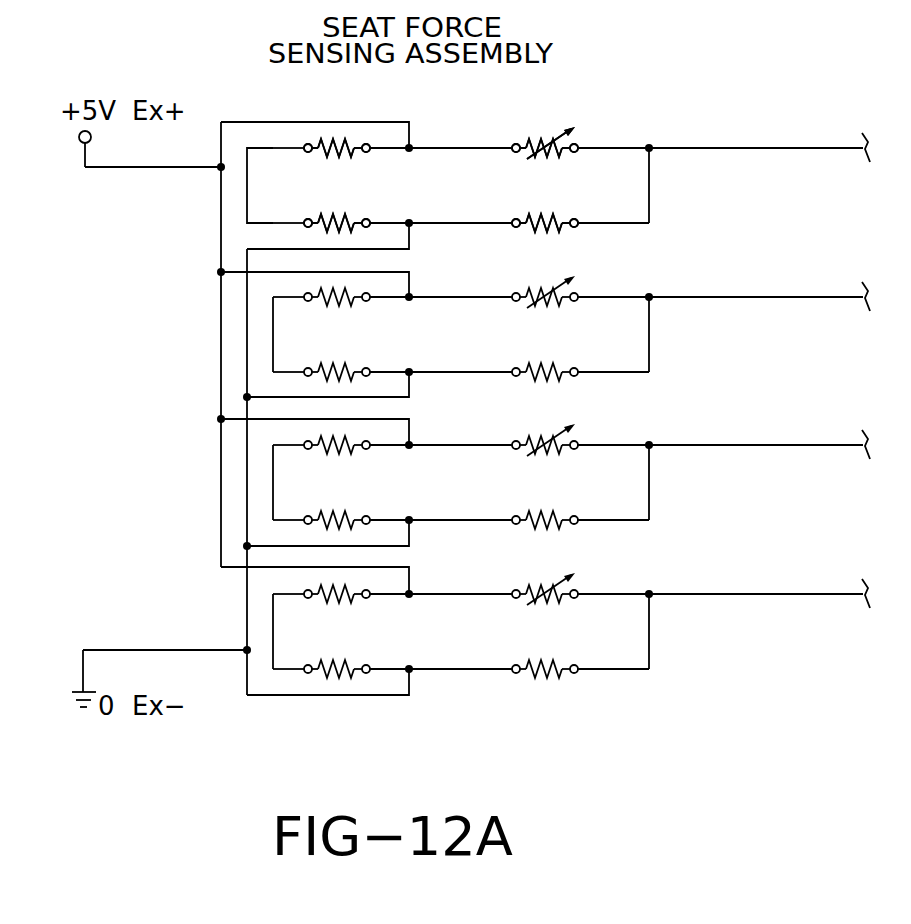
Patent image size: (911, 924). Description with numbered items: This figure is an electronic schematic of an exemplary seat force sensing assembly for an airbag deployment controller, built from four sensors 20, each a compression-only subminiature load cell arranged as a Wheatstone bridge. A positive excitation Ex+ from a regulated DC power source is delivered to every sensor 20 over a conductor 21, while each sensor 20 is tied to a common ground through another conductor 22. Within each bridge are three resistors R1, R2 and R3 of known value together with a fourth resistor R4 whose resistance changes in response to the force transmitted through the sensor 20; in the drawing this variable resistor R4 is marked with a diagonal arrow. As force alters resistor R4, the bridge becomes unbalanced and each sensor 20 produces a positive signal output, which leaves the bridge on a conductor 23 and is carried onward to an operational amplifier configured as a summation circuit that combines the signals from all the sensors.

The sensor 20 is at (450, 389).
The conductor 21 is at (108, 168).
The conductor 22 is at (178, 648).
The conductor 23 is at (759, 345).
The resistor R1 is at (346, 157).
The resistor R2 is at (327, 212).
The resistor R3 is at (537, 215).
The resistor R4 is at (537, 140).